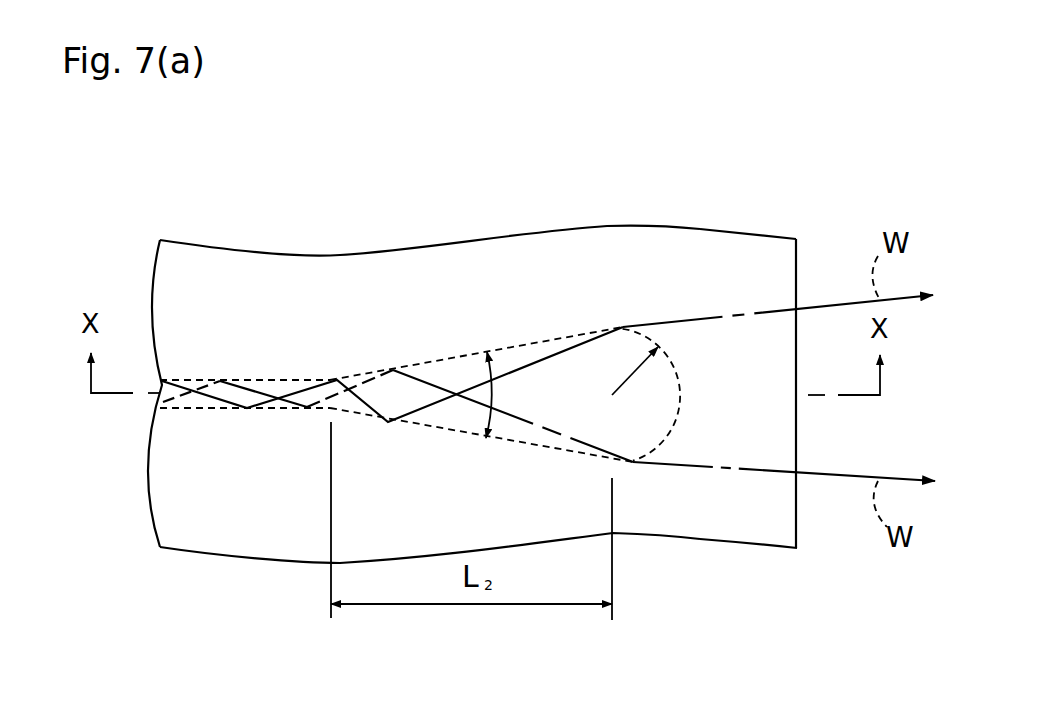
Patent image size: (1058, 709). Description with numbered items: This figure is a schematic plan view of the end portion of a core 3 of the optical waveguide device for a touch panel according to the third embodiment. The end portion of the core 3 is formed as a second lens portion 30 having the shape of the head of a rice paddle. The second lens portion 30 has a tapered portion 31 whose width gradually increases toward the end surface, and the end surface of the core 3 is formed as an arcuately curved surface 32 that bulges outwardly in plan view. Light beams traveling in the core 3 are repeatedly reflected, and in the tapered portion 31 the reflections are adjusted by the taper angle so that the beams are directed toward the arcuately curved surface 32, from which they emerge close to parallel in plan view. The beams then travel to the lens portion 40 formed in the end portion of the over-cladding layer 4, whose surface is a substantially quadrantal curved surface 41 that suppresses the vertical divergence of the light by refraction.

The core 3 is at (275, 372).
The over-cladding layer 4 is at (205, 258).
The second lens portion 30 is at (708, 181).
The tapered portion 31 is at (515, 358).
The arcuately curved surface 32 is at (678, 370).
The lens portion 40 is at (767, 253).
The substantially quadrantal curved surface 41 is at (787, 277).